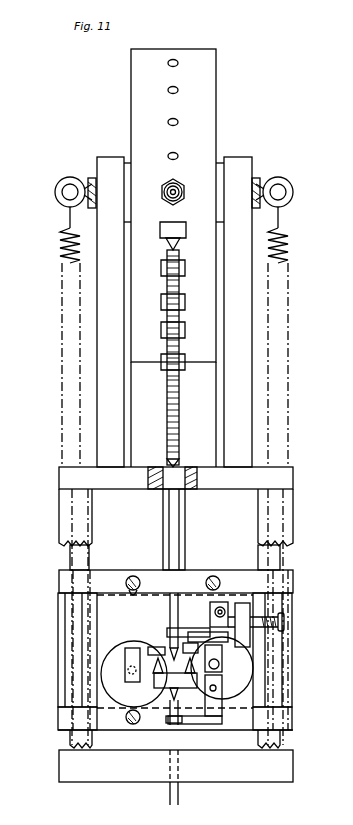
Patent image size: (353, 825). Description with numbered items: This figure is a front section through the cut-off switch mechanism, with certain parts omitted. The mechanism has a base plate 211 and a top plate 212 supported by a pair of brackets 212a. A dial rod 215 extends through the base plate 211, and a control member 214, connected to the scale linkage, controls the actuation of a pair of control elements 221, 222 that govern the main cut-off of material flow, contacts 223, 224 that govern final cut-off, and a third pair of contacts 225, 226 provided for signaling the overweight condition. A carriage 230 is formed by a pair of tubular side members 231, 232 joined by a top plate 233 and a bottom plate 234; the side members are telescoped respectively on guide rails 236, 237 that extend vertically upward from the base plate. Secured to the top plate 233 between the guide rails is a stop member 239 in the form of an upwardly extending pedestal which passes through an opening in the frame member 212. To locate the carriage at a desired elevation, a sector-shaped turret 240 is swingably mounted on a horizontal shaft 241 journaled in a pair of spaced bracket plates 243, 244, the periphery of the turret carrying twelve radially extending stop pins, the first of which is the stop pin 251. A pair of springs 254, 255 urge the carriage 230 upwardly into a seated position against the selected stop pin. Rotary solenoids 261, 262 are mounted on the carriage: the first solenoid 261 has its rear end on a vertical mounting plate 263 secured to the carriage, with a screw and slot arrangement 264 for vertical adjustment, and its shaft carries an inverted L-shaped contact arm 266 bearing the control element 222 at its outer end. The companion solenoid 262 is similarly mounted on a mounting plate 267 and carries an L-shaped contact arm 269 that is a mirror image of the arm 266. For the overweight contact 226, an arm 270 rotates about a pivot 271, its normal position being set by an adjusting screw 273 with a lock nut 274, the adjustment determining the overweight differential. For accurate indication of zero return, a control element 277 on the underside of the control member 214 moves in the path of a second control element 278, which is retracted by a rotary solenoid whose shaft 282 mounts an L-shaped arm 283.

The base plate 211 is at (60, 770).
The top plate 212 is at (59, 481).
The brackets 212a is at (92, 521).
The control member 214 is at (175, 699).
The dial rod 215 is at (178, 800).
The control element 221 is at (155, 673).
The control element 222 is at (152, 647).
The contact 223 is at (200, 684).
The contact 224 is at (198, 645).
The contact 225 is at (170, 650).
The contact 226 is at (174, 648).
The carriage 230 is at (50, 679).
The tubular side member 231 is at (285, 624).
The tubular side member 232 is at (62, 641).
The top plate 233 is at (59, 582).
The bottom plate 234 is at (58, 716).
The guide rail 236 is at (282, 555).
The guide rail 237 is at (70, 557).
The stop member 239 is at (186, 541).
The turret 240 is at (216, 122).
The horizontal shaft 241 is at (262, 178).
The bracket plate 243 is at (247, 157).
The bracket plate 244 is at (105, 157).
The stop pin 251 is at (180, 425).
The spring 254 is at (289, 233).
The spring 255 is at (62, 241).
The rotary solenoid 261 is at (106, 641).
The rotary solenoid 262 is at (243, 688).
The mounting plate 263 is at (112, 576).
The screw and slot arrangement 264 is at (135, 576).
The contact arm 266 is at (125, 665).
The mounting plate 267 is at (200, 576).
The contact arm 269 is at (222, 662).
The arm 270 is at (191, 628).
The pivot 271 is at (219, 606).
The adjusting screw 273 is at (282, 620).
The lock nut 274 is at (255, 632).
The control element 277 is at (166, 702).
The second control element 278 is at (170, 727).
The shaft 282 is at (222, 688).
The L-shaped arm 283 is at (222, 720).